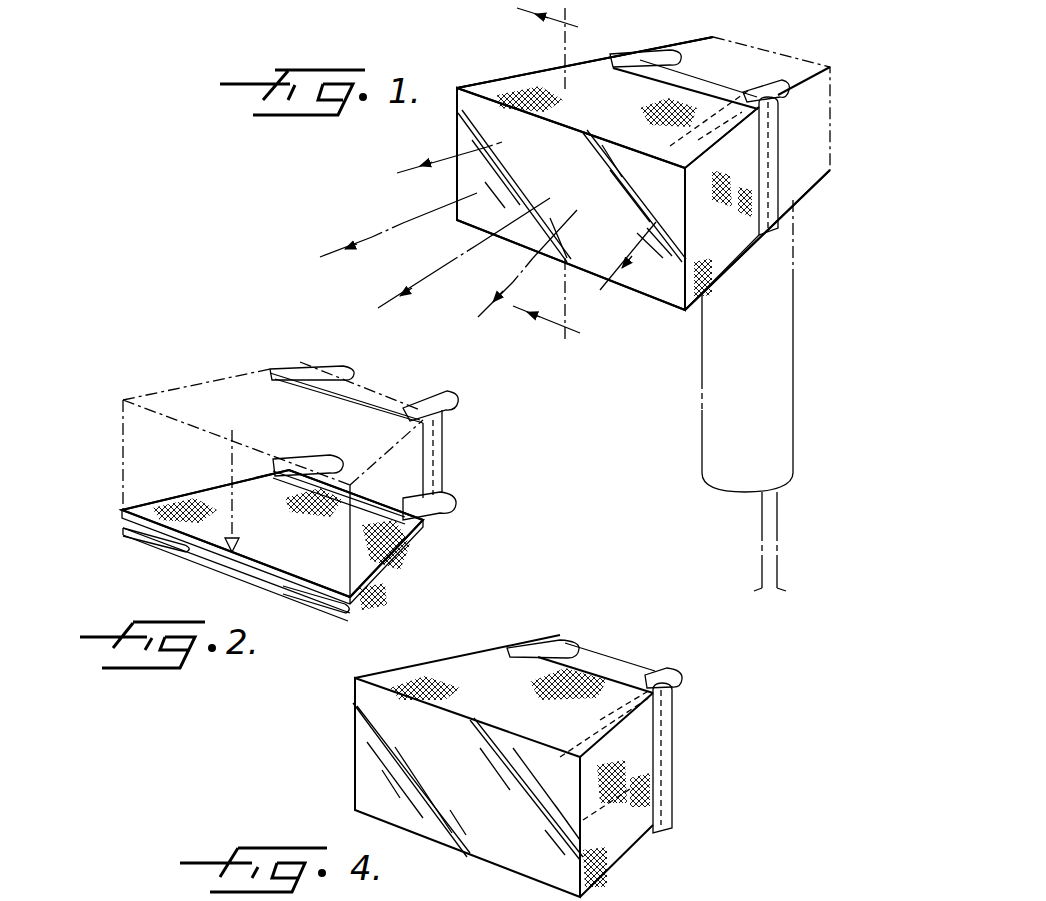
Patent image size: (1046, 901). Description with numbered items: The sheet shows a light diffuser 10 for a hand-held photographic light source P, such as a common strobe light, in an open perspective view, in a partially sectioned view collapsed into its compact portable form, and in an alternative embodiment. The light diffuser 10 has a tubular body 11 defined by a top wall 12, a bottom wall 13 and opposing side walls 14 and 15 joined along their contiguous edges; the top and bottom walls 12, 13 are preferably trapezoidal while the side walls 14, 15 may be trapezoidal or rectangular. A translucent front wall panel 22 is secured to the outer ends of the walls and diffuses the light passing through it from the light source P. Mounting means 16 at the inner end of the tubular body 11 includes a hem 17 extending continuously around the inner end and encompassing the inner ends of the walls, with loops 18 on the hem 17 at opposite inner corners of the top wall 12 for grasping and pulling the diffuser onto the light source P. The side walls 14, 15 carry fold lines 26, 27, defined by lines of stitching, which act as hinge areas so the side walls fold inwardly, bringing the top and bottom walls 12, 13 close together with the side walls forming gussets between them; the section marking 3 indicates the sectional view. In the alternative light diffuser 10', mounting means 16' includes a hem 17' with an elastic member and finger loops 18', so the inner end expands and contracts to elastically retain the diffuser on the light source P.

In FIG. 1, the light diffuser 10 is at (607, 169).
In FIG. 2, the light diffuser 10 is at (272, 479).
In FIG. 1, the tubular body 11 is at (545, 66).
In FIG. 1, the top wall 12 is at (655, 138).
In FIG. 2, the top wall 12 is at (312, 551).
In FIG. 2, the bottom wall 13 is at (232, 568).
In FIG. 1, the side wall 14 is at (740, 248).
In FIG. 2, the side wall 14 is at (334, 603).
In FIG. 1, the side wall 15 is at (456, 126).
In FIG. 2, the side wall 15 is at (140, 528).
In FIG. 1, the mounting means 16 is at (782, 344).
In FIG. 1, the hem 17 is at (720, 73).
In FIG. 2, the hem 17 is at (356, 432).
In FIG. 1, the loops 18 is at (743, 73).
In FIG. 2, the loops 18 is at (392, 420).
In FIG. 1, the front wall panel 22 is at (658, 286).
In FIG. 4, the front wall panel 22 is at (358, 752).
In FIG. 4, the fold line 26 is at (612, 800).
In FIG. 1, the fold line 27 is at (697, 222).
In FIG. 1, the section line 3- 3 is at (561, 186).
In FIG. 1, the light source P is at (818, 135).
In FIG. 4, the light diffuser 10' is at (504, 735).
In FIG. 4, the mounting means 16' is at (708, 758).
In FIG. 4, the hem 17' is at (617, 658).
In FIG. 4, the finger loops 18' is at (637, 643).